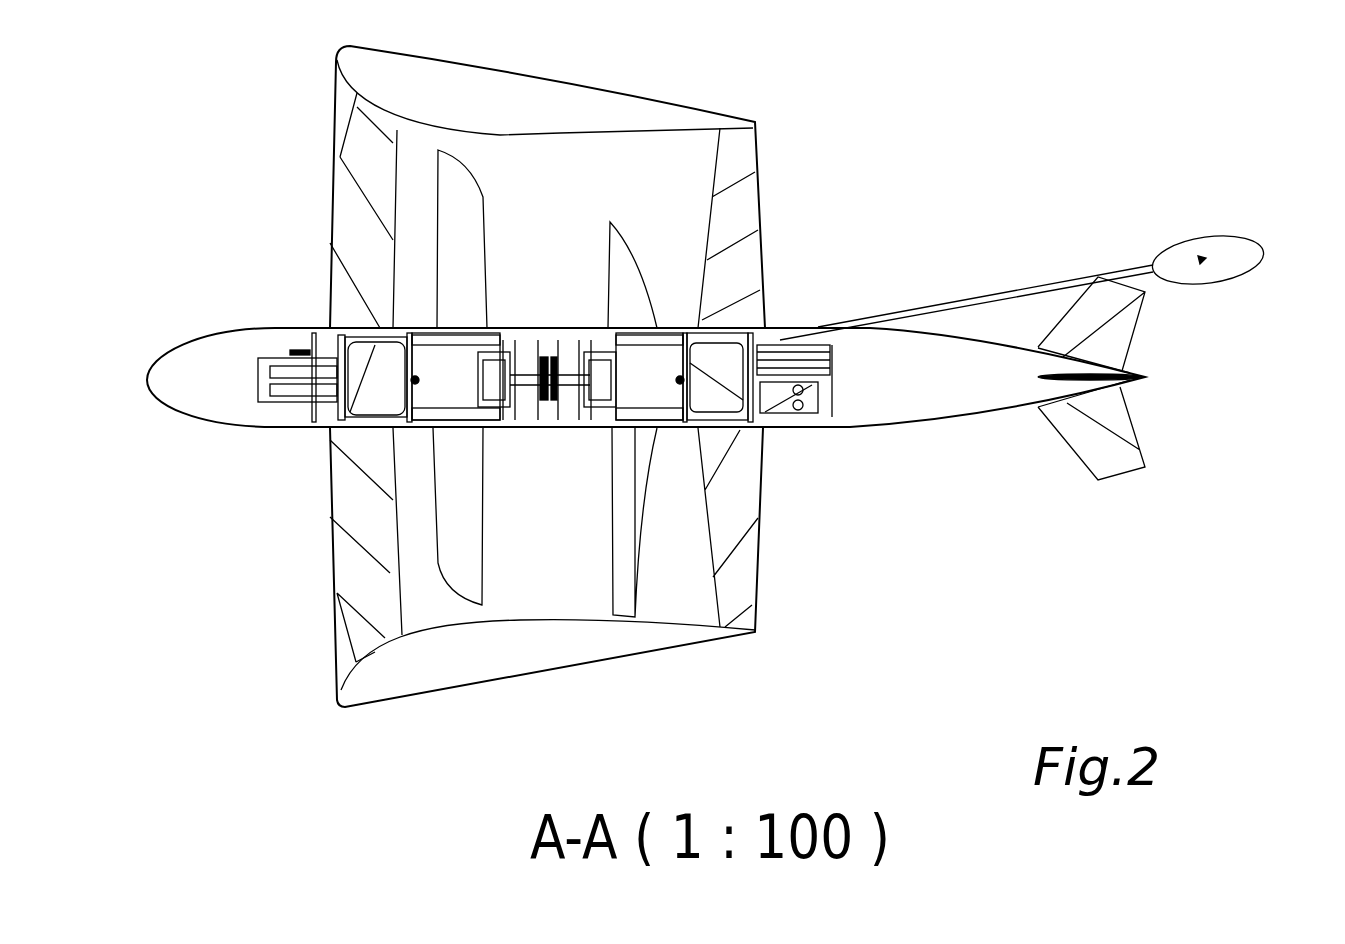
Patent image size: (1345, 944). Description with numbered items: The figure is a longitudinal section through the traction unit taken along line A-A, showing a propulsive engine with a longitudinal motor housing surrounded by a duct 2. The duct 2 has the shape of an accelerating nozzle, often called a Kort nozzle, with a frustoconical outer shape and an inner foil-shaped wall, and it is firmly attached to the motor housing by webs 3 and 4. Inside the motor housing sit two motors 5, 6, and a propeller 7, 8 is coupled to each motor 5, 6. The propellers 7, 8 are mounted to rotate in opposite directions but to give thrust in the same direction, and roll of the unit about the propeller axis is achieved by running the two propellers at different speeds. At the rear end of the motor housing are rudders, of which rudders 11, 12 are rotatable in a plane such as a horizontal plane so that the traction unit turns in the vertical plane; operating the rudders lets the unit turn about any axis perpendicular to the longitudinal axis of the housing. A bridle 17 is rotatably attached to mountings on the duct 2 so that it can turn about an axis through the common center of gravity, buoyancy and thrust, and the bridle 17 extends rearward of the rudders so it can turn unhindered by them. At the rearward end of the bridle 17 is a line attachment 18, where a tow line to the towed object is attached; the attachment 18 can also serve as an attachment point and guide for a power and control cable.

The duct 2 is at (450, 673).
The web 3 is at (742, 248).
The web 4 is at (343, 265).
The motor 5 is at (452, 367).
The motor 6 is at (657, 363).
The propeller 7 is at (467, 220).
The propeller 8 is at (618, 250).
The rudder 11 is at (1130, 457).
The rudder 12 is at (1120, 318).
The bridle 17 is at (967, 300).
The line attachment 18 is at (1248, 255).